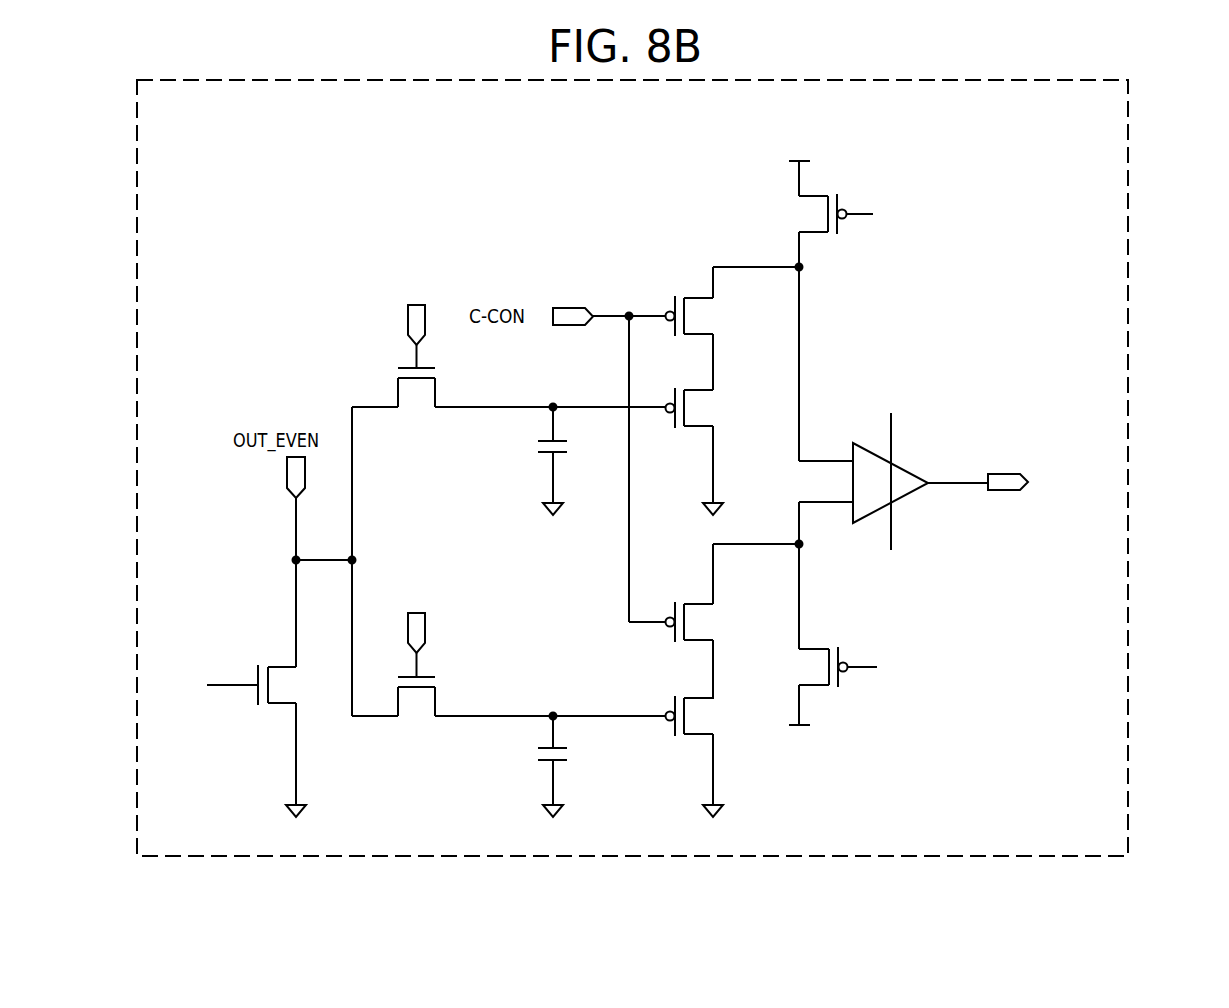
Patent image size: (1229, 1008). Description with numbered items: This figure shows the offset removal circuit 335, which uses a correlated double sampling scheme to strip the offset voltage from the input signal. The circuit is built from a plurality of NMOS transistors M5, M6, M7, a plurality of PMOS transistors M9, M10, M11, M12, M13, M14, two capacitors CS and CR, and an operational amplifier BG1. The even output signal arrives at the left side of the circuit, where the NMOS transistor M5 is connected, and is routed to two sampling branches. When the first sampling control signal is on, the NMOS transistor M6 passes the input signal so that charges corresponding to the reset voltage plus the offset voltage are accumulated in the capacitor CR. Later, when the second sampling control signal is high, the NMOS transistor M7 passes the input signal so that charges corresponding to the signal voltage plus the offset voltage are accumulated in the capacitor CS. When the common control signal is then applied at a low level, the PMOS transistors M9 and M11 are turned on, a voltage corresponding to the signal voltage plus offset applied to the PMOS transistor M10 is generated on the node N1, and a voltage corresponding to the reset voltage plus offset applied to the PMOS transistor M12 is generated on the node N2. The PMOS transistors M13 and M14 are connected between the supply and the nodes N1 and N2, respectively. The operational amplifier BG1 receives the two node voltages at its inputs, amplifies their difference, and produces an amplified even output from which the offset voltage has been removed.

The offset removal circuit 335 is at (1128, 432).
The NMOS transistor M5 is at (242, 741).
The NMOS transistor M6 is at (452, 659).
The NMOS transistor M7 is at (452, 353).
The PMOS transistor M9 is at (695, 328).
The PMOS transistor M10 is at (700, 451).
The PMOS transistor M11 is at (700, 621).
The PMOS transistor M12 is at (700, 756).
The PMOS transistor M13 is at (837, 300).
The PMOS transistor M14 is at (838, 628).
The capacitor CS is at (602, 460).
The capacitor CR is at (602, 765).
The node N1 is at (803, 268).
The node N2 is at (803, 545).
The operational amplifier BG1 is at (900, 462).